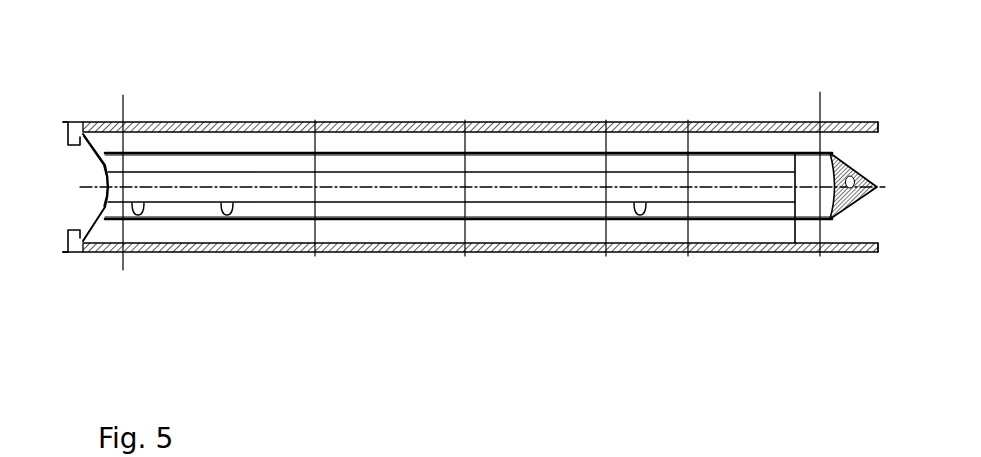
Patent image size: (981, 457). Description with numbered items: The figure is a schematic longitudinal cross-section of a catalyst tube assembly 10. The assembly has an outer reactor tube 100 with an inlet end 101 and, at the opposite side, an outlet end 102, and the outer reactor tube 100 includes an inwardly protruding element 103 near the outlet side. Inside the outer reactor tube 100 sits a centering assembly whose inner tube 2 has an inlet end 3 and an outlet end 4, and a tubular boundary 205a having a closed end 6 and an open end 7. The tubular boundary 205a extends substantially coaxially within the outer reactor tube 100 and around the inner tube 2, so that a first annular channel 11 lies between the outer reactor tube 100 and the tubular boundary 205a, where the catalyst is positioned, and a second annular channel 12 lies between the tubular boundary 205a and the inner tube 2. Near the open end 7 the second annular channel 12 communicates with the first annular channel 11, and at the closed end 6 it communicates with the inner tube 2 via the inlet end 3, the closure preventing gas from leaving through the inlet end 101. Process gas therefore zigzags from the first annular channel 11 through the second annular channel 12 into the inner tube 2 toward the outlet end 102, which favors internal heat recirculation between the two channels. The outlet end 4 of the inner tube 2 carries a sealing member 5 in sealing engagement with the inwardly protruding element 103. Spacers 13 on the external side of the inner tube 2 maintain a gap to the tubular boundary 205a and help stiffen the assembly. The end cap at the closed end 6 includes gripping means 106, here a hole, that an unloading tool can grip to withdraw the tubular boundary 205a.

The catalyst tube assembly 10 is at (804, 68).
The outer reactor tube 100 is at (377, 122).
The inlet end 101 is at (878, 142).
The outlet end 102 is at (50, 240).
The inwardly protruding element 103 is at (78, 138).
The inner tube 2 is at (345, 203).
The inlet end 3 is at (795, 203).
The outlet end 4 is at (106, 193).
The sealing member 5 is at (103, 165).
The closed end 6 is at (856, 175).
The open end 7 is at (104, 165).
The gripping means 106 is at (853, 192).
The first annular channel 11 is at (563, 142).
The second annular channel 12 is at (503, 165).
The spacers 13 is at (227, 215).
The tubular boundary 205a is at (280, 218).